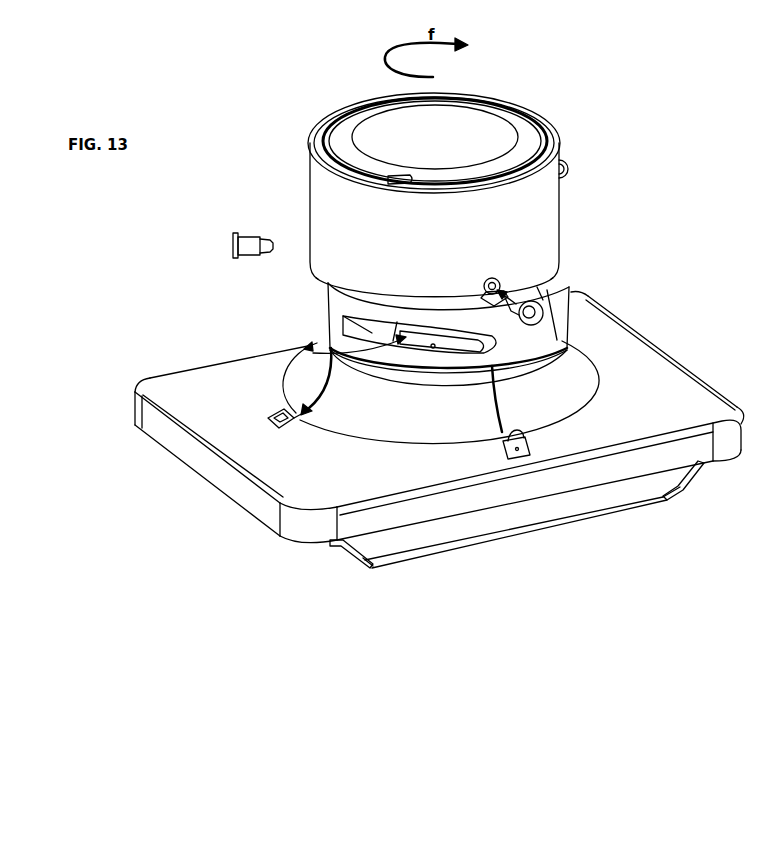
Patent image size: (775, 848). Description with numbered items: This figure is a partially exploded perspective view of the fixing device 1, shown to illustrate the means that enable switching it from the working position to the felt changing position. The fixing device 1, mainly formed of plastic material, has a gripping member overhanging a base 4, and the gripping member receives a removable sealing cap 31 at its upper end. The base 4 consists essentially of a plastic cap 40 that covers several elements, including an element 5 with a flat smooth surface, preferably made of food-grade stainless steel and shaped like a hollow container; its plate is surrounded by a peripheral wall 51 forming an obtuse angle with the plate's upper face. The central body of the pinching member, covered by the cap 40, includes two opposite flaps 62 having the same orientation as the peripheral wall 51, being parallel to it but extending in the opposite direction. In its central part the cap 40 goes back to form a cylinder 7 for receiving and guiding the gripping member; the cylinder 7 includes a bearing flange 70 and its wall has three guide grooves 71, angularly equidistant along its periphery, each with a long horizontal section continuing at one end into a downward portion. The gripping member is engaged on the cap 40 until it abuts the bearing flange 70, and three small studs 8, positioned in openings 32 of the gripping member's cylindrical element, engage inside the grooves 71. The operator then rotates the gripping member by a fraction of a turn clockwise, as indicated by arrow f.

The fixing device 1 is at (665, 159).
The base 4 is at (700, 325).
The element with a flat smooth surface 5 is at (532, 542).
The cylinder 7 is at (513, 343).
The stud 8 is at (247, 245).
The removable sealing cap 31 is at (472, 100).
The opening 32 is at (541, 294).
The cap 40 is at (583, 316).
The peripheral wall 51 is at (350, 562).
The flap 62 is at (333, 548).
The bearing flange 70 is at (320, 323).
The guide groove 71 is at (318, 338).